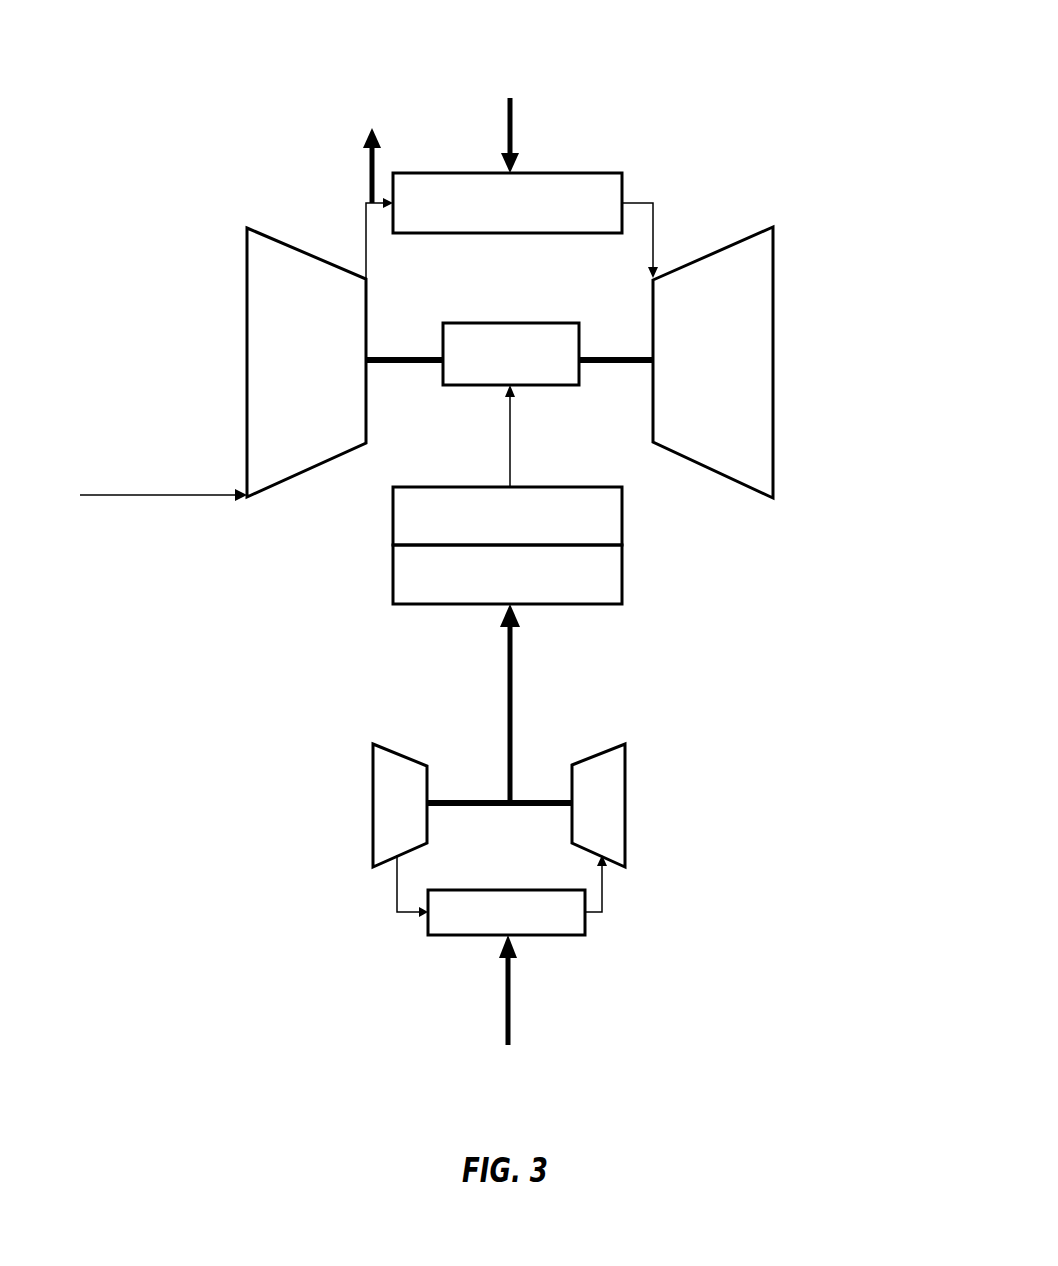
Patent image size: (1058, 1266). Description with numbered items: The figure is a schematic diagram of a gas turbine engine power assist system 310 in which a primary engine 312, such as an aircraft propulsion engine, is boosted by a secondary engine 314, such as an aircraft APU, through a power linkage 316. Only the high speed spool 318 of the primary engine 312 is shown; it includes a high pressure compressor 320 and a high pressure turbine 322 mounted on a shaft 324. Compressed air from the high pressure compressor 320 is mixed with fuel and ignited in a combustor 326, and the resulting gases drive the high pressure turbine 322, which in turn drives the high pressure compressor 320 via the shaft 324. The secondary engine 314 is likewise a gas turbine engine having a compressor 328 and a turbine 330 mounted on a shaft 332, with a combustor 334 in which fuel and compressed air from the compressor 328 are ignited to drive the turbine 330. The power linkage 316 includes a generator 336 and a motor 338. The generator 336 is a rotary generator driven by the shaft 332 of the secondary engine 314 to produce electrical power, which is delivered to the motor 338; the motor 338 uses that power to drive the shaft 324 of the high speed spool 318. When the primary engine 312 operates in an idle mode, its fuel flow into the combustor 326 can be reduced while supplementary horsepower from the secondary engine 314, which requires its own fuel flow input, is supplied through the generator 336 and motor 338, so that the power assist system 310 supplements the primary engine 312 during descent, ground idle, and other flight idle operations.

The gas turbine engine power assist system 310 is at (862, 101).
The primary engine 312 is at (185, 260).
The secondary engine 314 is at (298, 873).
The power linkage 316 is at (688, 605).
The high speed spool 318 is at (409, 331).
The high pressure compressor 320 is at (293, 248).
The high pressure turbine 322 is at (722, 245).
The shaft 324 is at (512, 323).
The combustor 326 is at (580, 172).
The compressor 328 is at (370, 762).
The turbine 330 is at (625, 762).
The shaft 332 is at (455, 803).
The combustor 334 is at (548, 935).
The generator 336 is at (393, 572).
The motor 338 is at (393, 512).